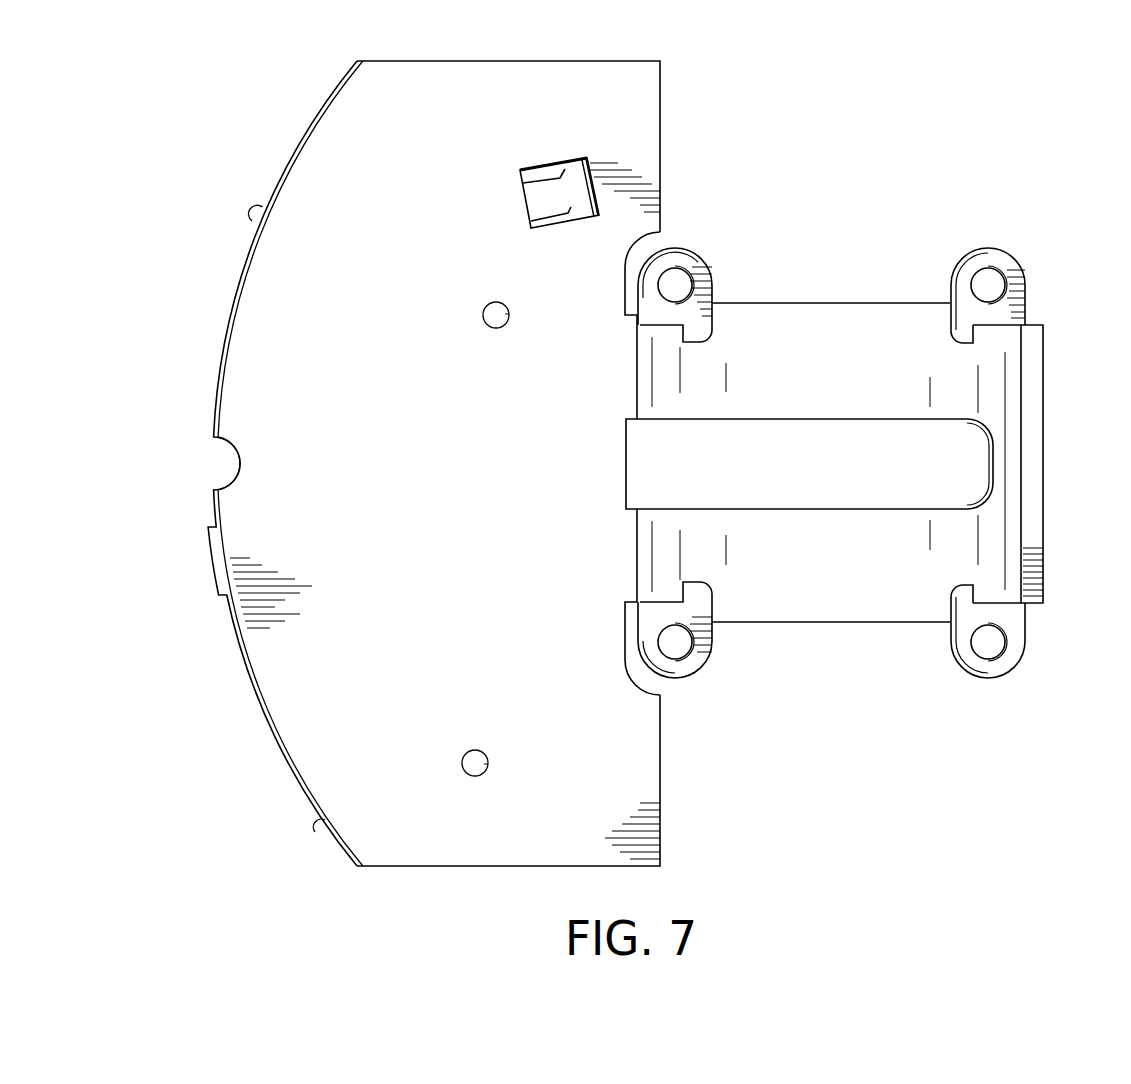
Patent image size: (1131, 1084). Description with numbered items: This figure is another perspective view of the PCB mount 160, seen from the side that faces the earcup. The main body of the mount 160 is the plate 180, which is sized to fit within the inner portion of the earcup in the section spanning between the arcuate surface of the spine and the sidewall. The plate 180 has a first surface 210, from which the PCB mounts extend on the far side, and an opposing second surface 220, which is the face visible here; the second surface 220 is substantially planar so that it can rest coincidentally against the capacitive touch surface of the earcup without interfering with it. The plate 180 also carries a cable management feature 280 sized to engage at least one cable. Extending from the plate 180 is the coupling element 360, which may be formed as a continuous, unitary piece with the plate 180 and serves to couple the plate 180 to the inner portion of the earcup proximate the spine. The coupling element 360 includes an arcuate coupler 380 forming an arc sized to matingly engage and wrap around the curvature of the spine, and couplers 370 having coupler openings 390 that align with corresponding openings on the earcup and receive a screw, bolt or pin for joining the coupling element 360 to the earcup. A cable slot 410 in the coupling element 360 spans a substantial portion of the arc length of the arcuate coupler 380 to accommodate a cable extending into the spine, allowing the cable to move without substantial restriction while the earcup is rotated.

The mount 160 is at (240, 104).
The plate 180 is at (678, 162).
The first surface 210 is at (205, 295).
The second surface 220 is at (408, 460).
The cable management feature 280 is at (544, 156).
The coupling element 360 is at (972, 197).
The coupler 370 is at (940, 255).
The arcuate coupler 380 is at (812, 365).
The coupler openings 390 is at (686, 271).
The cable slot 410 is at (652, 476).